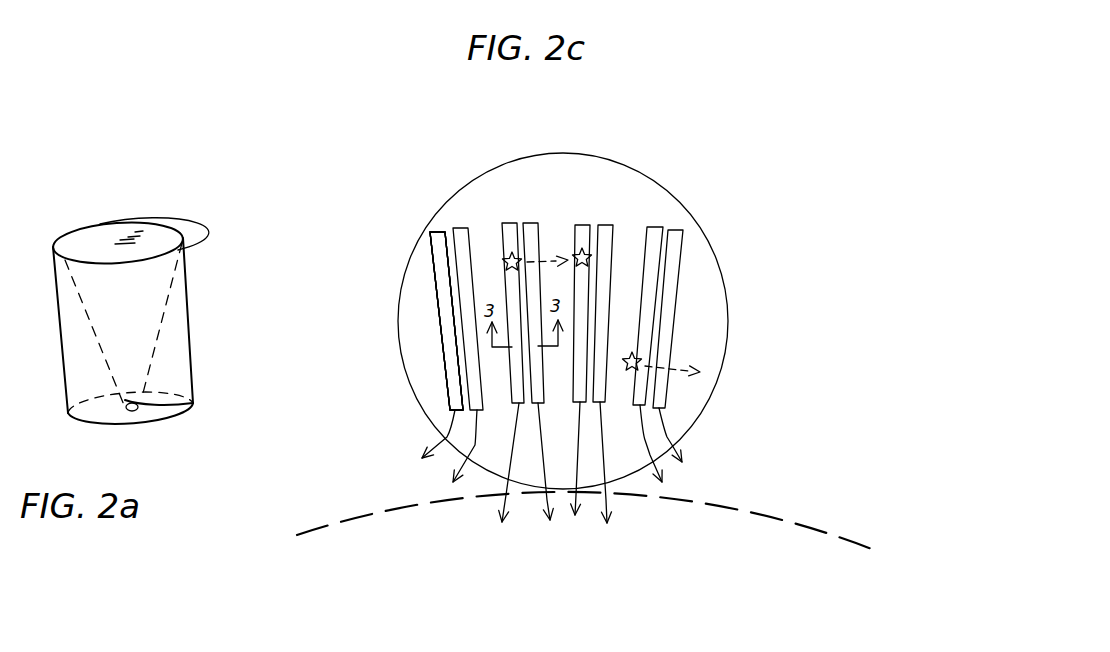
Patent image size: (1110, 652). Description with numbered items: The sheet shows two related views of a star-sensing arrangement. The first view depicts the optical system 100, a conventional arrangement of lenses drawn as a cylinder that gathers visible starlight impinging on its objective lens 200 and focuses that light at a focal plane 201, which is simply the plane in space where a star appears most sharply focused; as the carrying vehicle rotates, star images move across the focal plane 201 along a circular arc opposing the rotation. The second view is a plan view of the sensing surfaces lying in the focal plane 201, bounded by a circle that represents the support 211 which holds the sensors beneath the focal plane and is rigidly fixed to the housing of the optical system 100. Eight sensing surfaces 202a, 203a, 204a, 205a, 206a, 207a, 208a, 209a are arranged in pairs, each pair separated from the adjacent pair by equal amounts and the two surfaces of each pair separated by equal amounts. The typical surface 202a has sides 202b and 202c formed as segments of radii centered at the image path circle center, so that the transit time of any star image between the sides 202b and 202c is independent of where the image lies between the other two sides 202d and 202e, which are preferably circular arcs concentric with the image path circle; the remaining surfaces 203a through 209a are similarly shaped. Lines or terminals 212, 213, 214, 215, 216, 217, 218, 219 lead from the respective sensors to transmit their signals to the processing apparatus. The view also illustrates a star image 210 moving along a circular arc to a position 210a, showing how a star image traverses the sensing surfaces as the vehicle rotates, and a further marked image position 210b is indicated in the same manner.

In FIG. 2a, the optical system 100 is at (190, 316).
In FIG. 2a, the objective lens 200 is at (142, 232).
In FIG. 2a, the focal plane 201 is at (145, 423).
In FIG. 2c, the sensing surface 202a is at (445, 248).
In FIG. 2c, the side 202b is at (441, 332).
In FIG. 2c, the side 202c is at (452, 247).
In FIG. 2c, the side 202d is at (432, 230).
In FIG. 2c, the side 202e is at (452, 410).
In FIG. 2c, the sensing surface 203a is at (462, 228).
In FIG. 2c, the sensing surface 204a is at (507, 223).
In FIG. 2c, the sensing surface 205a is at (530, 223).
In FIG. 2c, the sensing surface 206a is at (583, 225).
In FIG. 2c, the sensing surface 207a is at (612, 225).
In FIG. 2c, the sensing surface 208a is at (655, 226).
In FIG. 2c, the sensing surface 209a is at (673, 229).
In FIG. 2c, the image 210 is at (503, 266).
In FIG. 2c, the position 210a is at (570, 261).
In FIG. 2c, the heat source point 210b is at (642, 370).
In FIG. 2c, the support 211 is at (623, 162).
In FIG. 2c, the line or terminal 212 is at (437, 443).
In FIG. 2c, the line or terminal 213 is at (460, 468).
In FIG. 2c, the line or terminal 214 is at (497, 502).
In FIG. 2c, the line or terminal 215 is at (553, 500).
In FIG. 2c, the line or terminal 216 is at (580, 502).
In FIG. 2c, the line or terminal 217 is at (610, 503).
In FIG. 2c, the line or terminal 218 is at (650, 456).
In FIG. 2c, the line or terminal 219 is at (668, 437).